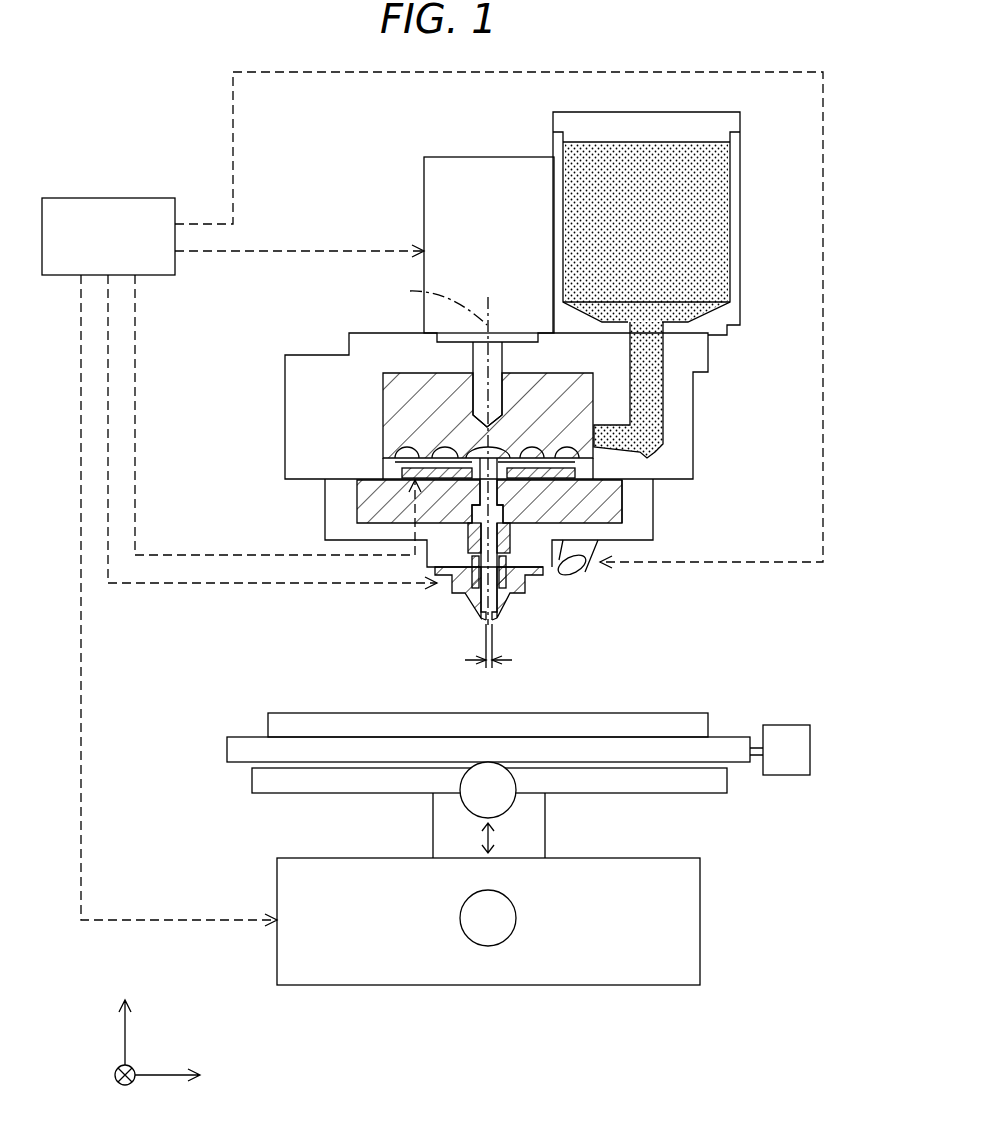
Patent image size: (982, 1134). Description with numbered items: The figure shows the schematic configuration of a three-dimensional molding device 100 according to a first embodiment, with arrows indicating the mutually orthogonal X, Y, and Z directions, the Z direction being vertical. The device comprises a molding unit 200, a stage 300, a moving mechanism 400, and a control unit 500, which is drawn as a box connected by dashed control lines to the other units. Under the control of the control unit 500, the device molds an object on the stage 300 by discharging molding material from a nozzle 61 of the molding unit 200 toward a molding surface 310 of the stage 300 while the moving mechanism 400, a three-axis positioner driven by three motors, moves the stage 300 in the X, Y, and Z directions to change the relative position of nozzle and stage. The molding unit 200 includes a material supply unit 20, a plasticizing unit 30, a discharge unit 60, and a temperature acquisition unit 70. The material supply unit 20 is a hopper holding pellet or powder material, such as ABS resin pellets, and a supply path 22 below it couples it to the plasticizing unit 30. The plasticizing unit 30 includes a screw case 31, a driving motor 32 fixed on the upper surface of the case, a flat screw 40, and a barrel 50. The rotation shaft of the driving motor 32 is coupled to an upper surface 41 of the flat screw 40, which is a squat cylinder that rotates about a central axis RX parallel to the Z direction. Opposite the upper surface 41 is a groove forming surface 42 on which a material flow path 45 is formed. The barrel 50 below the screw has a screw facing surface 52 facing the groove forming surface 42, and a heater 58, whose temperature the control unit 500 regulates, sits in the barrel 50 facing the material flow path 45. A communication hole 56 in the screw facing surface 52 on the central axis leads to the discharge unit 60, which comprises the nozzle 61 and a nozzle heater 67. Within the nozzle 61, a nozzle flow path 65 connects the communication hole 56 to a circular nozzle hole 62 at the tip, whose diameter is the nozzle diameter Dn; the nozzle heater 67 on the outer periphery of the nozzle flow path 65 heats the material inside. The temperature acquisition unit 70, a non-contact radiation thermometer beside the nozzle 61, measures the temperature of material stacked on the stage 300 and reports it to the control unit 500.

The three-dimensional molding device 100 is at (148, 98).
The molding unit 200 is at (355, 130).
The control unit 500 is at (116, 198).
The material supply unit 20 is at (740, 221).
The supply path 22 is at (645, 388).
The plasticizing unit 30 is at (370, 188).
The screw case 31 is at (372, 333).
The driving motor 32 is at (424, 214).
The flat screw 40 is at (408, 398).
The upper surface 41 is at (400, 373).
The groove forming surface 42 is at (400, 484).
The material flow path 45 is at (470, 449).
The barrel 50 is at (378, 512).
The screw facing surface 52 is at (440, 468).
The communication hole 56 is at (600, 515).
The heater 58 is at (565, 502).
The discharge unit 60 is at (355, 633).
The nozzle 61 is at (483, 602).
The nozzle hole 62 is at (495, 616).
The nozzle flow path 65 is at (510, 580).
The nozzle heater 67 is at (470, 575).
The temperature acquisition unit 70 is at (585, 576).
The stage 300 is at (745, 665).
The molding surface 310 is at (630, 713).
The moving mechanism 400 is at (745, 840).